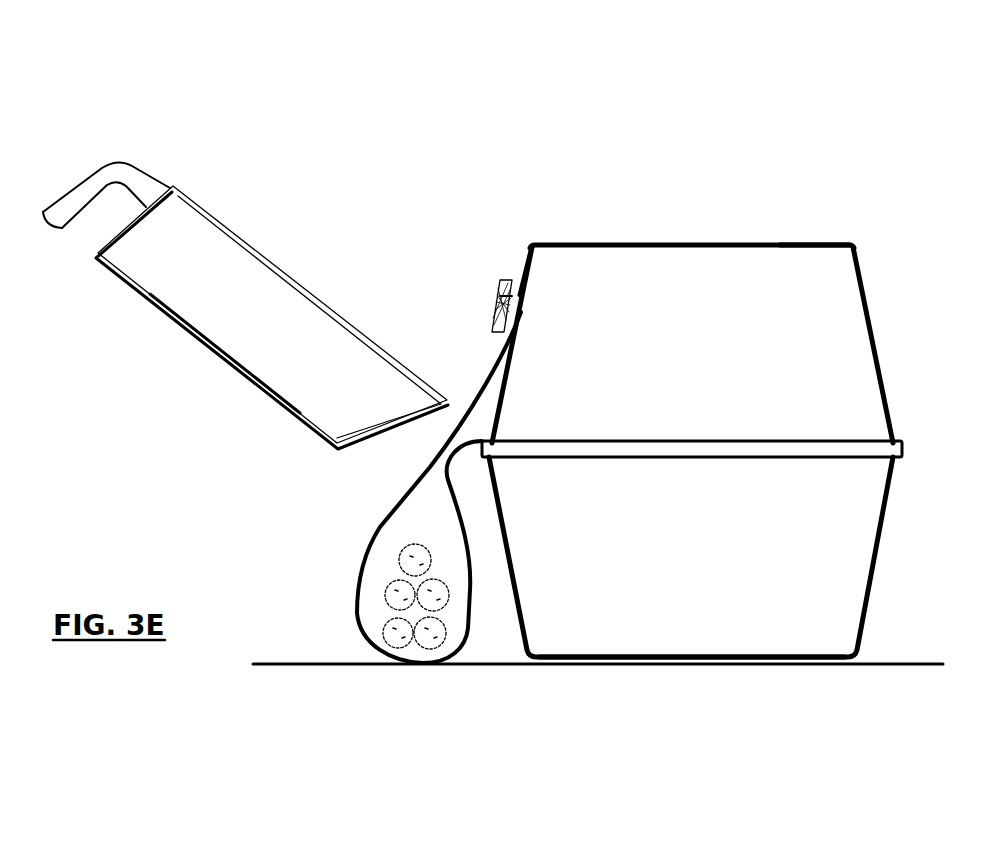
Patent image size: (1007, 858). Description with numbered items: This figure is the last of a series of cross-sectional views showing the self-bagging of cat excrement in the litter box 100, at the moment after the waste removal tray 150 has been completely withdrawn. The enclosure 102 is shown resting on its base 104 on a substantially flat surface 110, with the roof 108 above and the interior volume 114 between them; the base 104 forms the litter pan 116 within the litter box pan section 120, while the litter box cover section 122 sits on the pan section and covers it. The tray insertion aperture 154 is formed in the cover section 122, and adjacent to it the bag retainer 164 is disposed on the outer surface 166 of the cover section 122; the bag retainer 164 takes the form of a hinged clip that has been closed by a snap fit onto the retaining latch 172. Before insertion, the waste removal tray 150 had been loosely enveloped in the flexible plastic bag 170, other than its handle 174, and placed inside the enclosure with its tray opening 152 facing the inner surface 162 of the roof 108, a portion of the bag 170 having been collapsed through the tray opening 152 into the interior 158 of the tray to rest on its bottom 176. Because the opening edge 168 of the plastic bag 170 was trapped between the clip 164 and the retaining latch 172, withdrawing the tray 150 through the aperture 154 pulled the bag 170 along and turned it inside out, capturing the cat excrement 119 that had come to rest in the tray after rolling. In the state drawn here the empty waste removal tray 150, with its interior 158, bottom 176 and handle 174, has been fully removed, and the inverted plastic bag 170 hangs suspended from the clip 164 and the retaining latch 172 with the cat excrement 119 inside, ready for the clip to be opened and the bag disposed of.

The litter box 100 is at (840, 184).
The enclosure 102 is at (689, 444).
The base 104 is at (665, 659).
The roof 108 is at (605, 244).
The substantially flat surface 110 is at (287, 662).
The interior volume 114 is at (677, 300).
The litter pan 116 is at (677, 635).
The cat excrement 119 is at (417, 557).
The litter box pan section 120 is at (527, 638).
The litter box cover section 122 is at (866, 308).
The waste removal tray 150 is at (245, 230).
The tray opening 152 is at (272, 315).
The tray insertion aperture 154 is at (403, 485).
The interior 158 is at (231, 315).
The inner surface 162 is at (746, 256).
The bag retainer 164 is at (522, 279).
The outer surface 166 is at (512, 262).
The opening edge 168 is at (510, 307).
The flexible plastic bag 170 is at (375, 510).
The retaining latch 172 is at (510, 313).
The handle 174 is at (88, 187).
The bottom 176 is at (202, 338).